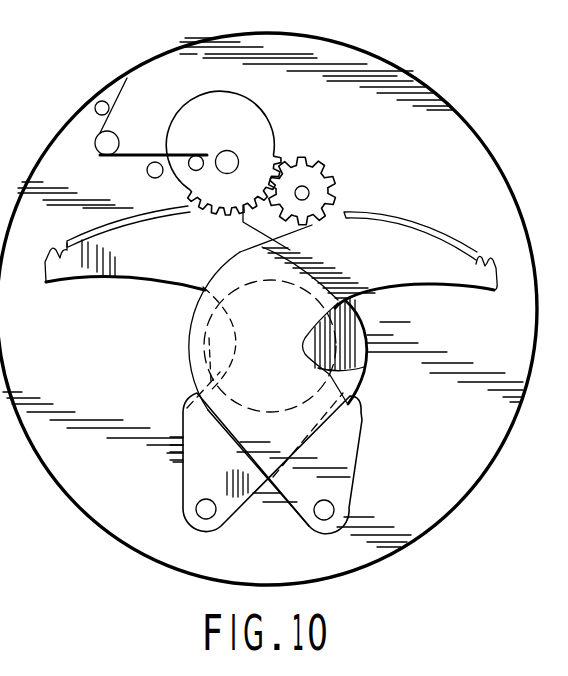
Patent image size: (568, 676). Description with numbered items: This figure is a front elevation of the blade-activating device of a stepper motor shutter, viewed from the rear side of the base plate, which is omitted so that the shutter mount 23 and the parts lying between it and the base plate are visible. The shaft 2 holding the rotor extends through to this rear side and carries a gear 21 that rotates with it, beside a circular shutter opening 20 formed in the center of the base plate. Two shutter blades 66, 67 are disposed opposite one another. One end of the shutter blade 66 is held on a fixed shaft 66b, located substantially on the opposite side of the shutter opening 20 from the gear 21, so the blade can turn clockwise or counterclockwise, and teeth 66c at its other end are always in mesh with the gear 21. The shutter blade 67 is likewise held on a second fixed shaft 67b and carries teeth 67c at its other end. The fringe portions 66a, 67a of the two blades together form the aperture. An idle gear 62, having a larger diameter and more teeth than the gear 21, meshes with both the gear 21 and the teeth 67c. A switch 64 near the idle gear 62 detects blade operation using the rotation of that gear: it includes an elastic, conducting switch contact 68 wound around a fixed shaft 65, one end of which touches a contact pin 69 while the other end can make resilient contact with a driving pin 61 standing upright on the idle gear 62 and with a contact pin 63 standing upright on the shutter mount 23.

The shaft 2 is at (302, 186).
The shutter opening 20 is at (250, 290).
The gear 21 is at (334, 180).
The shutter mount 23 is at (474, 450).
The driving pin 61 is at (201, 168).
The idle gear 62 is at (243, 117).
The contact pin 63 is at (150, 176).
The switch 64 is at (157, 108).
The fixed shaft 65 is at (100, 148).
The shutter blade 66 is at (384, 279).
The fringe portion 66a is at (364, 363).
The fixed shaft 66b is at (334, 508).
The teeth 66c is at (409, 212).
The shutter blade 67 is at (132, 270).
The fringe portion 67a is at (228, 360).
The second fixed shaft 67b is at (200, 509).
The teeth 67c is at (110, 209).
The switch contact 68 is at (137, 154).
The contact pin 69 is at (95, 108).